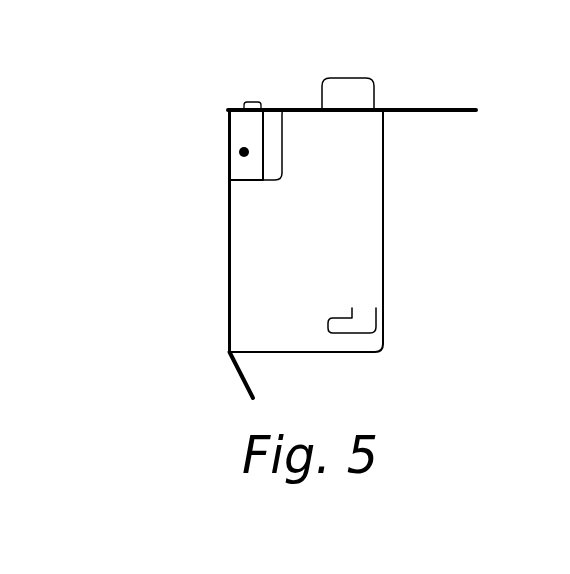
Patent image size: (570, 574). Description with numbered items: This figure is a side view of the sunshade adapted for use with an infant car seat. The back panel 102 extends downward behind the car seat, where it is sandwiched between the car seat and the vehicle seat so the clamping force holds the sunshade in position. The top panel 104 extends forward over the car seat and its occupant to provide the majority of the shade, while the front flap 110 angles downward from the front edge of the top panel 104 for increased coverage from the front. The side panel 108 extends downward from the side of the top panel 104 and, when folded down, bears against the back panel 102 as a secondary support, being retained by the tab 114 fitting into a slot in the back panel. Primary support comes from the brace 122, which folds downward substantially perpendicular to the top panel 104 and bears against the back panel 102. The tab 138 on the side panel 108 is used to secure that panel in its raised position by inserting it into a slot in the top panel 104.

The back panel 102 is at (415, 112).
The top panel 104 is at (227, 285).
The side panel 108 is at (385, 203).
The front flap 110 is at (237, 378).
The tab 114 is at (372, 75).
The brace 122 is at (244, 152).
The tab 138 is at (352, 336).